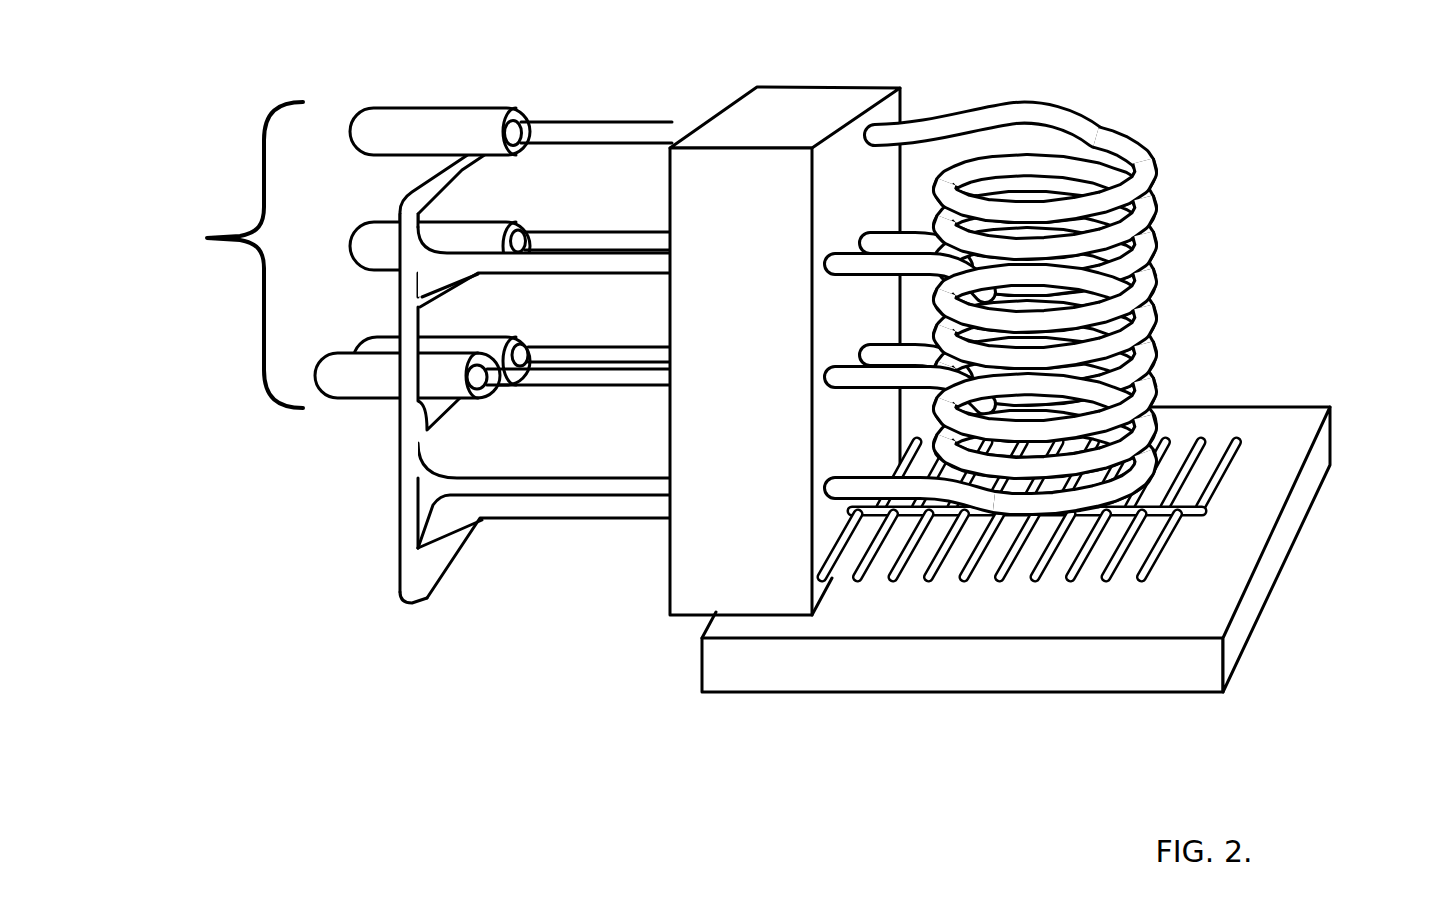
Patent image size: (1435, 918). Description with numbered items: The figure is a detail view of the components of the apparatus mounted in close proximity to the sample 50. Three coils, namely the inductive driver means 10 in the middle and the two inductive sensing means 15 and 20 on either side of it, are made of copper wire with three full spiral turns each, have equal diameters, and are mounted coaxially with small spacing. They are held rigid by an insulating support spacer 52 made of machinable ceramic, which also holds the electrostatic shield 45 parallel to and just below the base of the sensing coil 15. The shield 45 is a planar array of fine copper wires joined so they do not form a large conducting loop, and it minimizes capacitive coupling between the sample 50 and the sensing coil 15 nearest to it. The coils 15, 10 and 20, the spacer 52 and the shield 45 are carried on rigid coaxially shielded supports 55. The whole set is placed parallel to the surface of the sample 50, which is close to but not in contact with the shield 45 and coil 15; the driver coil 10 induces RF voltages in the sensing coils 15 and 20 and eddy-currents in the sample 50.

The inductive driver means 10 is at (1173, 282).
The inductive sensing means 15 is at (1166, 374).
The inductive sensing means 20 is at (1173, 123).
The electrostatic shield 45 is at (1248, 448).
The sample 50 is at (1103, 687).
The insulating support spacer 52 is at (791, 111).
The rigid coaxially shielded supports 55 is at (204, 251).